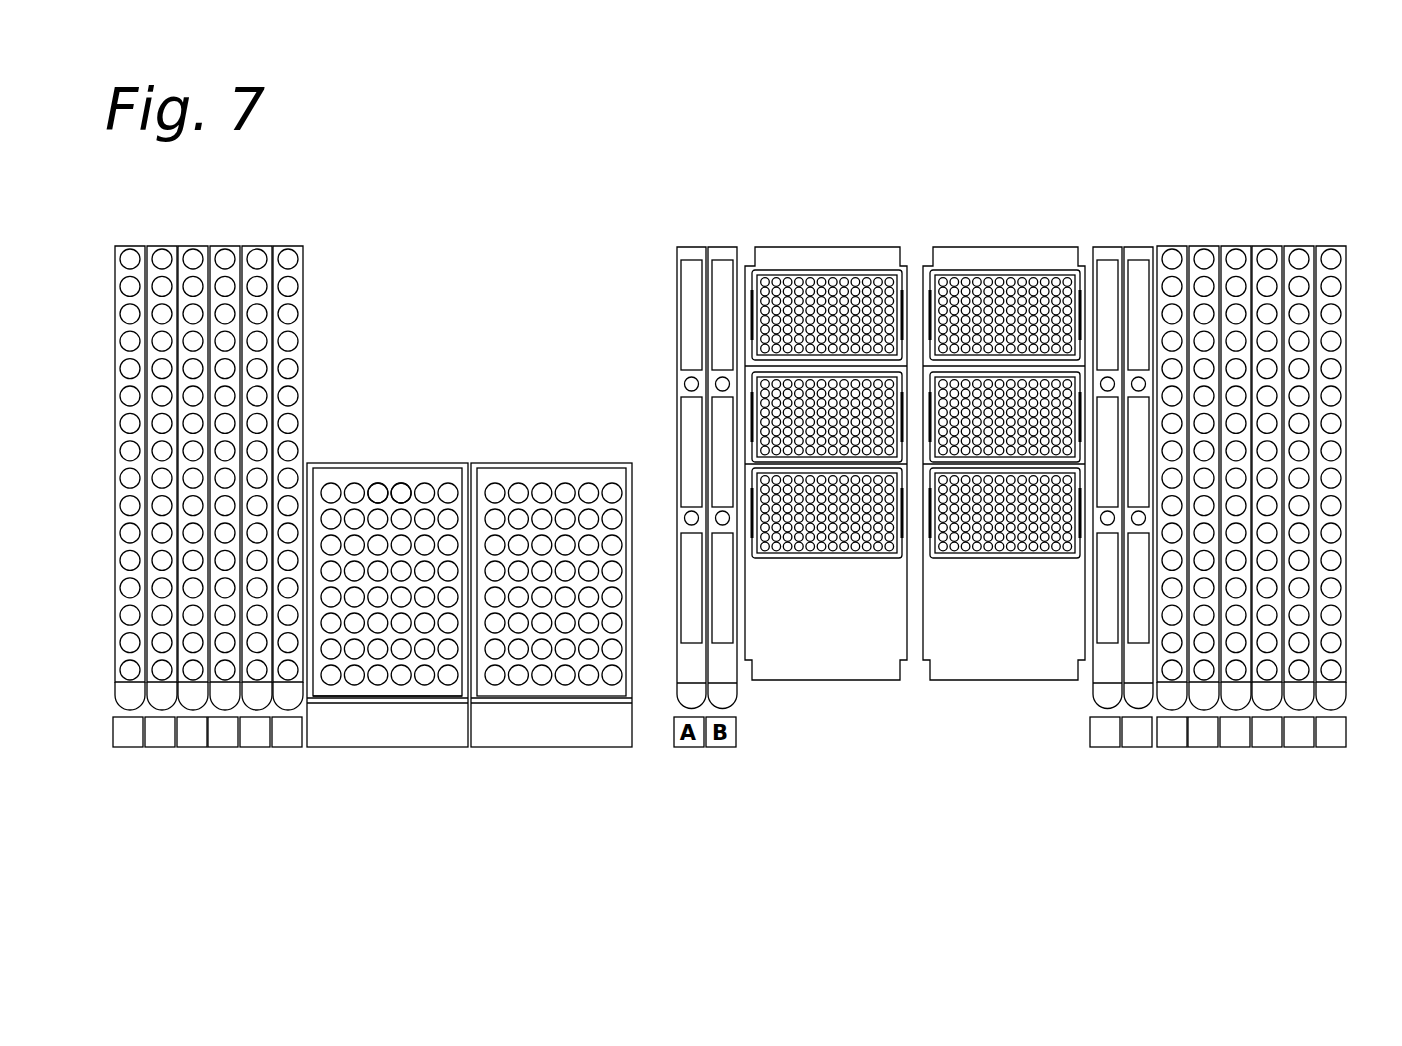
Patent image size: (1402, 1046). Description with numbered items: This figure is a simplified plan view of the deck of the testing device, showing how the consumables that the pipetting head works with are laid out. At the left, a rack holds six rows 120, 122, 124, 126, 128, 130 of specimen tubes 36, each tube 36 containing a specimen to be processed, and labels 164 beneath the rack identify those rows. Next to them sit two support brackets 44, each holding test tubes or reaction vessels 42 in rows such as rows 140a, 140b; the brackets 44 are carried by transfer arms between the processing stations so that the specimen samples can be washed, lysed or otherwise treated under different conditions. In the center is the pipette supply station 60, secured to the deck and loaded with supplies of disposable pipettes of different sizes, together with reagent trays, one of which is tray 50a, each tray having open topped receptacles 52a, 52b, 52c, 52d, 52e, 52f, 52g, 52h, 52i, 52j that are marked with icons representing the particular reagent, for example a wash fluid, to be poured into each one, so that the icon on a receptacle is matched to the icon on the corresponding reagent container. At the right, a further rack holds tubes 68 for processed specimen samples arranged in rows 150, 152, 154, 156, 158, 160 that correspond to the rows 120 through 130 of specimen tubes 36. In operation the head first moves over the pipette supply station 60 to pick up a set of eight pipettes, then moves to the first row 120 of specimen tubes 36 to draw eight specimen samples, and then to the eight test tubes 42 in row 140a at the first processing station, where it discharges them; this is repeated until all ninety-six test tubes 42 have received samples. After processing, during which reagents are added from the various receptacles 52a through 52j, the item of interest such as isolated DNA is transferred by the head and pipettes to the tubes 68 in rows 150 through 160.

The tubes 36 is at (291, 254).
The test tubes or reaction vessels 42 is at (405, 478).
The support bracket 44 is at (352, 478).
The tray 50a is at (695, 247).
The open topped receptacle 52a is at (723, 590).
The open topped receptacle 52b is at (720, 272).
The open topped receptacle 52c is at (720, 297).
The open topped receptacle 52d is at (690, 430).
The open topped receptacle 52e is at (692, 262).
The open topped receptacle 52f is at (1107, 480).
The open topped receptacle 52g is at (1110, 302).
The open topped receptacle 52h is at (1138, 567).
The open topped receptacle 52i is at (1138, 427).
The open topped receptacle 52j is at (1138, 285).
The pipette supply station 60 is at (852, 616).
The tubes 68 is at (1302, 400).
The first row 120 is at (290, 752).
The row 122 is at (258, 752).
The row 124 is at (230, 755).
The row 126 is at (194, 755).
The row 128 is at (157, 755).
The row 130 is at (133, 755).
The row 140a is at (443, 692).
The rack position 140b is at (422, 692).
The row 150 is at (1331, 755).
The row 152 is at (1299, 755).
The row 154 is at (1267, 755).
The row 156 is at (1235, 755).
The row 158 is at (1203, 755).
The row 160 is at (1171, 755).
The label row 164 is at (108, 735).